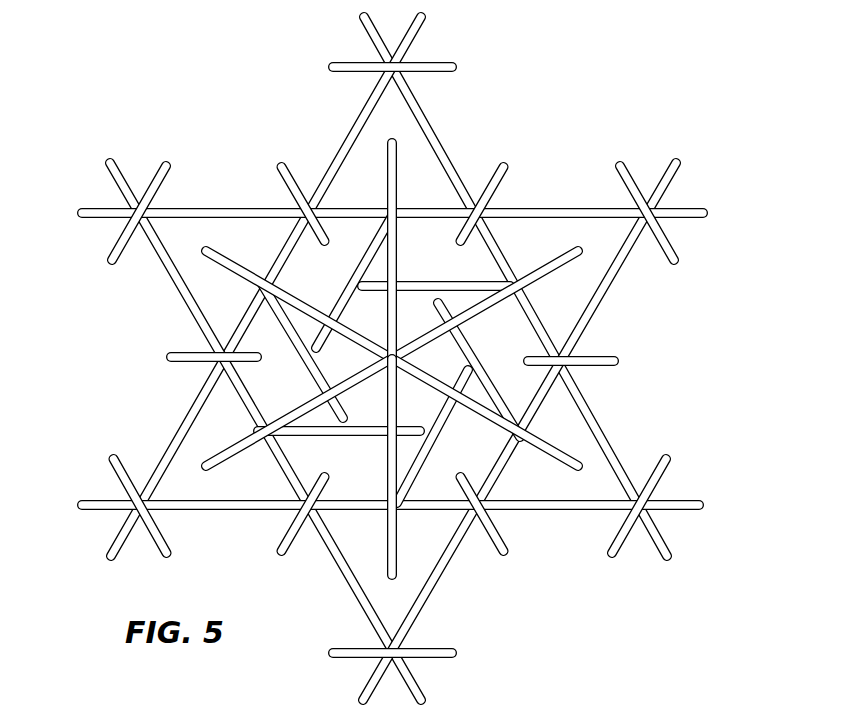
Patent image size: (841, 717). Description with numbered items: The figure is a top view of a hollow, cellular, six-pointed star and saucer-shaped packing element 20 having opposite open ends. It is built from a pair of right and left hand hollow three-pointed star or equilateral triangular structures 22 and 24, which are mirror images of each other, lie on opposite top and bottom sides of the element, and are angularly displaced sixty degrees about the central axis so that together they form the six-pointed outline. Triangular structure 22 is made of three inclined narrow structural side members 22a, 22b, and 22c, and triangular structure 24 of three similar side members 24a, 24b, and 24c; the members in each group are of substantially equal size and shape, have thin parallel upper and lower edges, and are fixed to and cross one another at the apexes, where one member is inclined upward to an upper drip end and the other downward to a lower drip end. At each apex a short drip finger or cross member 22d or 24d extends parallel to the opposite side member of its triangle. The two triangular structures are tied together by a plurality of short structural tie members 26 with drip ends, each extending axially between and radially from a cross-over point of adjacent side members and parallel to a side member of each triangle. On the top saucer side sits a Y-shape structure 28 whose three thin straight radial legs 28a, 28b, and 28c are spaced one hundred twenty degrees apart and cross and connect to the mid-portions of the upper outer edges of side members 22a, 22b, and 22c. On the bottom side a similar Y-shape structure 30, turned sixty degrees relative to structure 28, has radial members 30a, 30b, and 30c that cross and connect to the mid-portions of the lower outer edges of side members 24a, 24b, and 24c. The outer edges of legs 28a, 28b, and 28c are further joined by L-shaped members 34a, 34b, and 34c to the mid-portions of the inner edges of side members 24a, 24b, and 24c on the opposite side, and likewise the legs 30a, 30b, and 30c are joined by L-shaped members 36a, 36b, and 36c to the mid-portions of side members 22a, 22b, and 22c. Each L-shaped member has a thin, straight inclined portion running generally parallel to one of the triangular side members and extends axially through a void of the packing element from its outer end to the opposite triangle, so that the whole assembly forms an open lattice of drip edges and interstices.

The packing element 20 is at (156, 136).
The triangular structure 22 is at (436, 125).
The structural side member 22a is at (600, 424).
The structural side member 22b is at (192, 405).
The structural side member 22c is at (556, 510).
The drip finger 22d is at (423, 64).
The triangular structure 24 is at (352, 615).
The structural side member 24a is at (200, 322).
The structural side member 24b is at (603, 298).
The structural side member 24c is at (543, 210).
The drip finger 24d is at (627, 173).
The tie member 26 is at (172, 357).
The Y-shape structure 28 is at (400, 560).
The radial structural member 28a is at (387, 547).
The radial structural member 28b is at (566, 262).
The radial structural member 28c is at (217, 263).
The Y-shape structure 30 is at (386, 148).
The radial structural member 30a is at (395, 176).
The radial structural member 30b is at (218, 465).
The radial structural member 30c is at (573, 462).
The L-shaped member 34a is at (347, 434).
The L-shaped member 34b is at (478, 362).
The L-shaped member 34c is at (356, 278).
The L-shaped member 36a is at (438, 286).
The L-shaped member 36b is at (320, 375).
The L-shaped member 36c is at (428, 436).